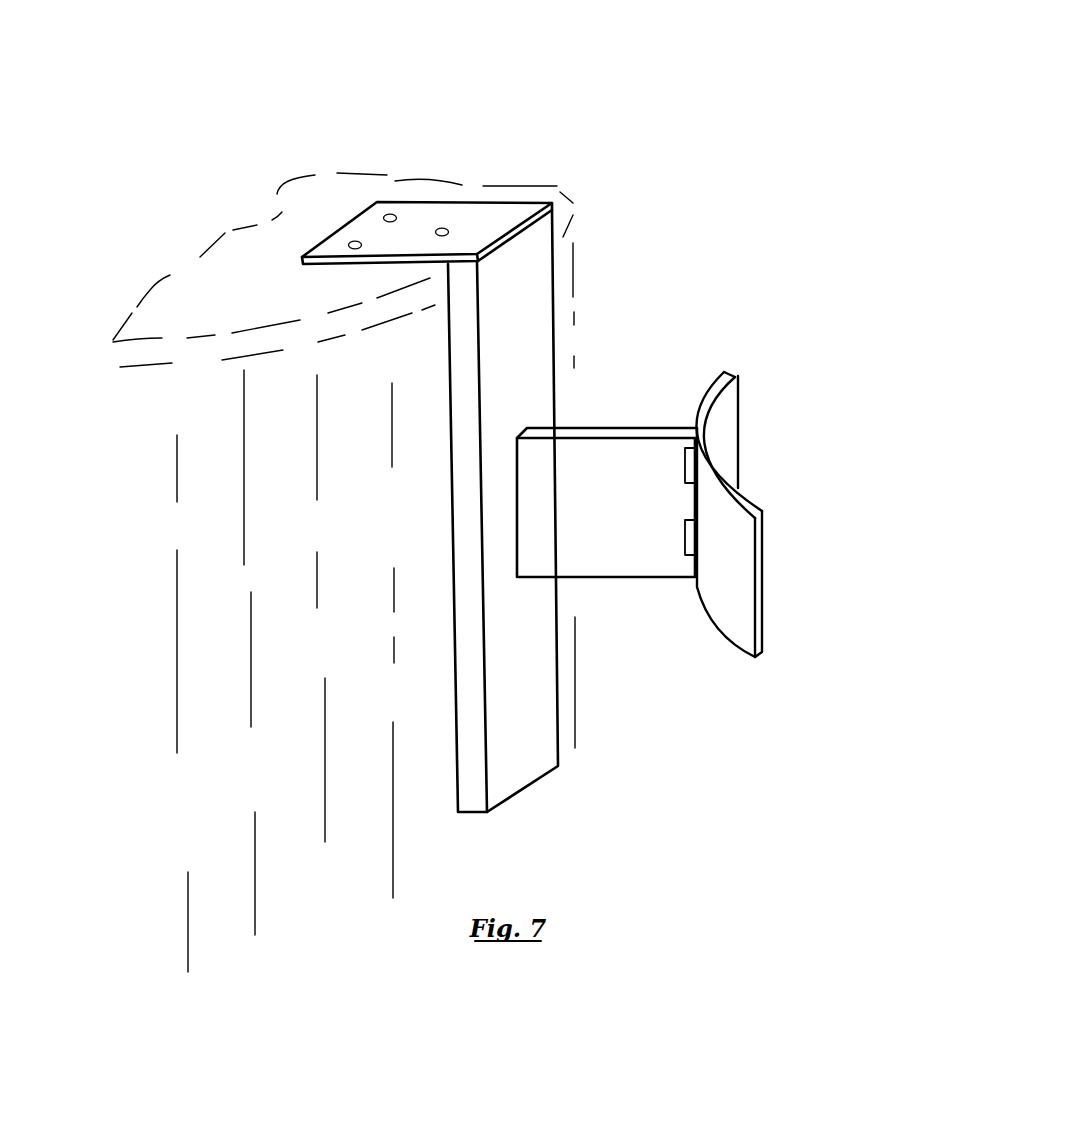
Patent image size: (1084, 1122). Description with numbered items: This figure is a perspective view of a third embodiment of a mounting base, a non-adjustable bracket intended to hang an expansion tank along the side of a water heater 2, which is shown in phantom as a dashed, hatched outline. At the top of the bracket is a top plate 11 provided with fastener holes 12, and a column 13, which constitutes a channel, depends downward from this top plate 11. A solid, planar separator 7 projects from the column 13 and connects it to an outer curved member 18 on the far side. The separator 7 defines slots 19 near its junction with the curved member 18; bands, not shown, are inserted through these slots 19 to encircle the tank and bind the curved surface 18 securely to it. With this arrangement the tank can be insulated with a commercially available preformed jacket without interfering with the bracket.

The water heater 2 is at (223, 300).
The separator 7 is at (567, 474).
The top plate 11 is at (467, 224).
The fastener holes 12 is at (393, 216).
The column 13 is at (465, 457).
The outer curved member 18 is at (727, 437).
The slots 19 is at (689, 545).